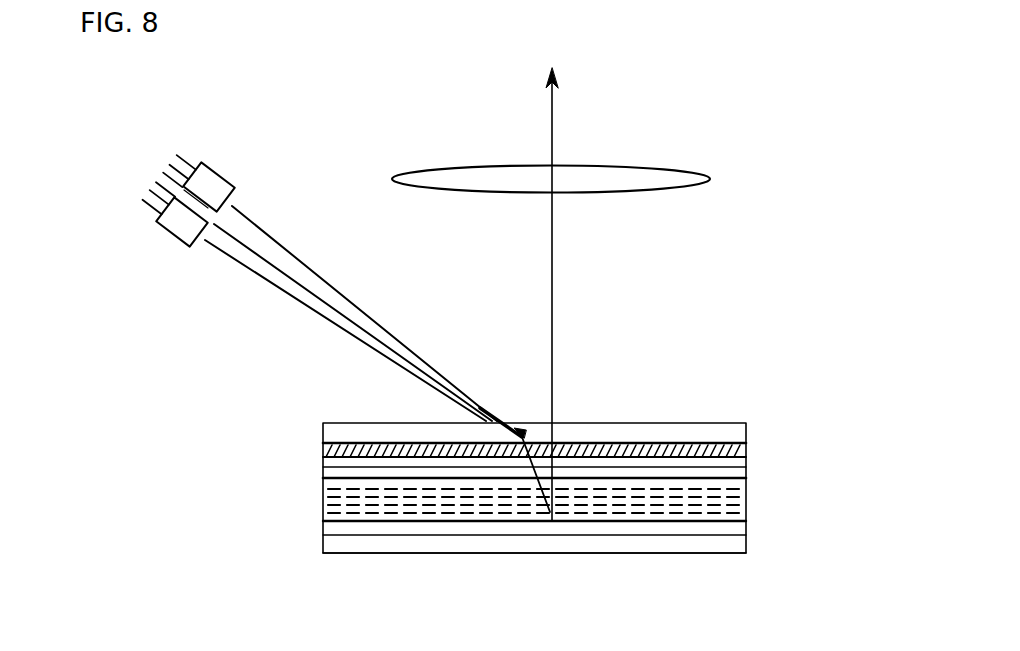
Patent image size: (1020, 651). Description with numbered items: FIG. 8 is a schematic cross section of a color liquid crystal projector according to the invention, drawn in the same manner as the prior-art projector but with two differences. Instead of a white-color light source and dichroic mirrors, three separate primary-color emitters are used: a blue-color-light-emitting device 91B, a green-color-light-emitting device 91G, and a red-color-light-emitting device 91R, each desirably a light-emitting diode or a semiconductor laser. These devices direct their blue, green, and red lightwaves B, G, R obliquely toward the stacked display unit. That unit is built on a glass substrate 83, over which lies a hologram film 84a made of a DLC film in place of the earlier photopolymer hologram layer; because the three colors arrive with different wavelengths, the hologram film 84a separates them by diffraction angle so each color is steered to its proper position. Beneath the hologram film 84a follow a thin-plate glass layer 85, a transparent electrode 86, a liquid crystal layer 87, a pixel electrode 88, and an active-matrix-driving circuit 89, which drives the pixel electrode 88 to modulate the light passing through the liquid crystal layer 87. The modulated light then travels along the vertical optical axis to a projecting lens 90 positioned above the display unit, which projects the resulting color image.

The glass substrate 83 is at (613, 433).
The hologram film 84a is at (710, 440).
The thin-plate glass layer 85 is at (747, 450).
The transparent electrode 86 is at (745, 478).
The liquid crystal layer 87 is at (736, 510).
The pixel electrode 88 is at (728, 533).
The active-matrix-driving circuit 89 is at (713, 553).
The projecting lens 90 is at (644, 168).
The blue-color-light-emitting device 91B is at (212, 173).
The green-color-light-emitting device 91G is at (181, 200).
The red-color-light-emitting device 91R is at (178, 237).
The blue laser beam B is at (287, 250).
The green laser beam G is at (322, 288).
The red laser beam R is at (270, 283).